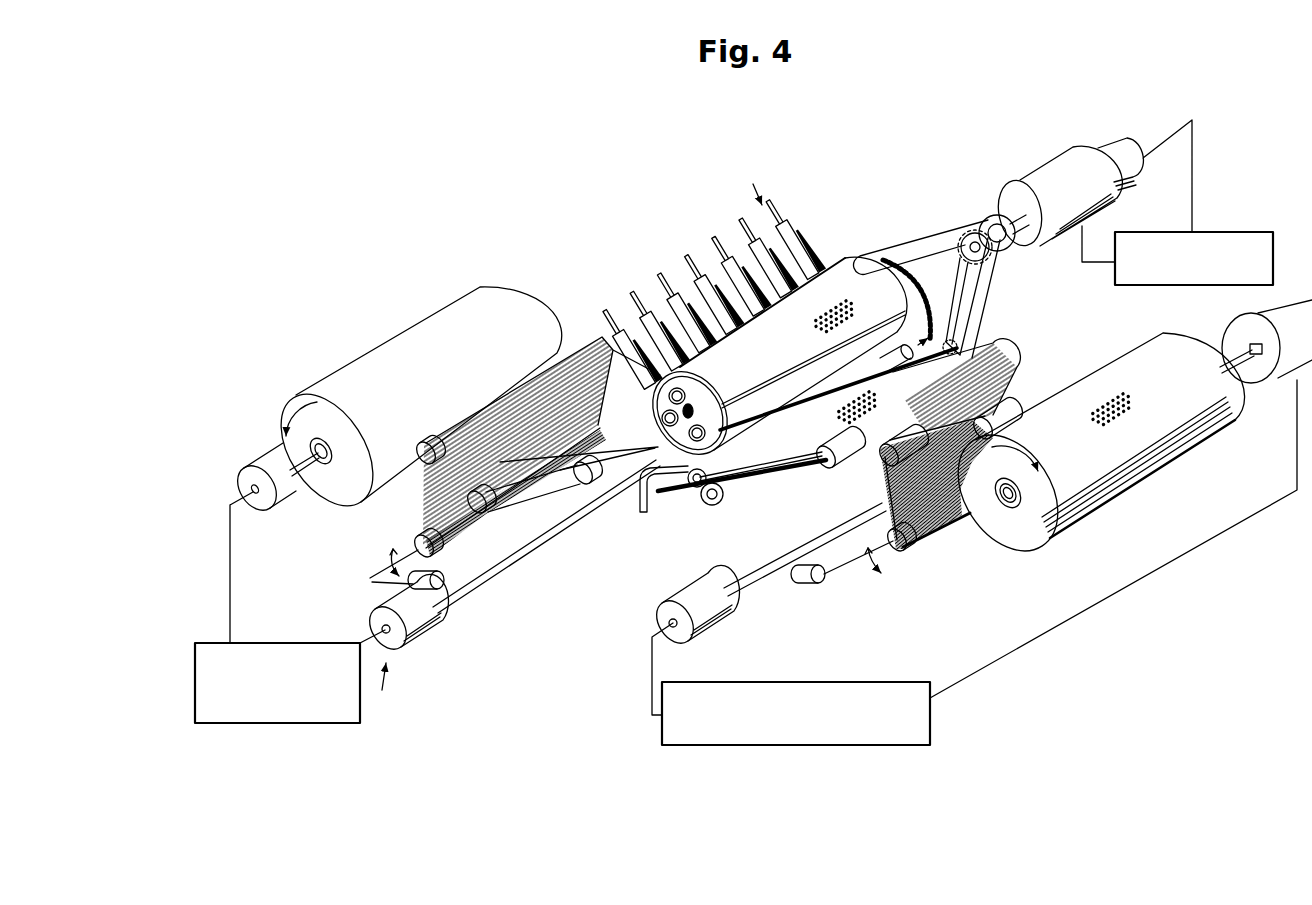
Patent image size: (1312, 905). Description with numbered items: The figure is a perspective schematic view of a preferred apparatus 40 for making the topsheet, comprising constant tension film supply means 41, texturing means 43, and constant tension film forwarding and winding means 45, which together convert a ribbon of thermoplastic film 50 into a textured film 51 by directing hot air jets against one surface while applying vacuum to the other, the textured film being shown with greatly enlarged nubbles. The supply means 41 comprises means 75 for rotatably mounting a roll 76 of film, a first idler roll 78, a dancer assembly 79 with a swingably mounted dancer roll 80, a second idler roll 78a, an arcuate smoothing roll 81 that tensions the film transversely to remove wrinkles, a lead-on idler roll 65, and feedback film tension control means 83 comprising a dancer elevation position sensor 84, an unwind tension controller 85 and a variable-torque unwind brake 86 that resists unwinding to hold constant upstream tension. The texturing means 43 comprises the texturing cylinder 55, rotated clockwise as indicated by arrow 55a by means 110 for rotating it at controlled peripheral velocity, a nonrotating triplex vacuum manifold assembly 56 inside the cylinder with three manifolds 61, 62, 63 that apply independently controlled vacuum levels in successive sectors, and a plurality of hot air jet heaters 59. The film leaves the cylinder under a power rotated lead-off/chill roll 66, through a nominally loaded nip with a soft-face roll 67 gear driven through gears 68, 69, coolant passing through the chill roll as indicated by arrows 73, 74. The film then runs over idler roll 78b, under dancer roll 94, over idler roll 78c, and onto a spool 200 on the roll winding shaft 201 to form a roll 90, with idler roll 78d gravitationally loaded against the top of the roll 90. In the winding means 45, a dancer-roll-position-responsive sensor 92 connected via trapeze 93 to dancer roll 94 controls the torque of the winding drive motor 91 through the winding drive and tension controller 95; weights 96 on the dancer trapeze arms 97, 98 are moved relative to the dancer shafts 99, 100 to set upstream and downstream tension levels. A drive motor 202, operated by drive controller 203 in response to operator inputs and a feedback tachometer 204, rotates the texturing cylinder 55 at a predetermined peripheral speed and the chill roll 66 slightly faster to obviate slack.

The apparatus 40 is at (725, 314).
The constant tension film supply means 41 is at (379, 687).
The texturing means 43 is at (771, 333).
The constant tension film forwarding and winding means 45 is at (1050, 638).
The ribbon of thermoplastic film 50 is at (502, 460).
The textured film 51 is at (906, 388).
The texturing cylinder 55 is at (712, 397).
The arrow 55a is at (798, 352).
The triplex vacuum manifold assembly 56 is at (662, 419).
The hot air jet heaters 59 is at (631, 338).
The vacuum manifold 61 is at (683, 416).
The vacuum manifold 62 is at (684, 392).
The vacuum manifold 63 is at (705, 428).
The lead-on idler roll 65 is at (585, 484).
The lead-off/chill roll 66 is at (781, 463).
The soft-face roll 67 is at (745, 482).
The gear 68 is at (695, 488).
The gear 69 is at (713, 506).
The arrow 73 is at (642, 553).
The arrow 74 is at (936, 336).
The means for rotatably mounting a roll 75 is at (315, 510).
The roll of thermoplastic film 76 is at (356, 488).
The first idler roll 78 is at (422, 462).
The second idler roll 78a is at (485, 512).
The idler roll 78b is at (822, 466).
The idler roll 78c is at (899, 452).
The idler roll 78d is at (1000, 427).
The dancer assembly 79 is at (368, 578).
The dancer roll 80 is at (422, 542).
The smoothing roll 81 is at (549, 482).
The feedback film tension control means 83 is at (272, 730).
The dancer elevation position sensor 84 is at (443, 614).
The unwind tension controller 85 is at (315, 645).
The variable-torque unwind brake 86 is at (270, 460).
The roll of textured film 90 is at (1025, 542).
The winding drive motor 91 is at (1242, 312).
The dancer-roll-position-responsive sensor 92 is at (690, 590).
The trapeze 93 is at (845, 586).
The dancer roll 94 is at (901, 553).
The winding drive and tension controller 95 is at (770, 682).
The weights 96 is at (440, 577).
The dancer trapeze arm 97 is at (383, 586).
The dancer trapeze arm 98 is at (796, 579).
The dancer shaft 99 is at (486, 578).
The dancer shaft 100 is at (747, 574).
The means for rotating the texturing cylinder 110 is at (968, 214).
The spool 200 is at (1000, 500).
The roll winding shaft 201 is at (1006, 505).
The drive motor 202 is at (1056, 188).
The drive controller 203 is at (1234, 233).
The feedback tachometer 204 is at (1120, 150).